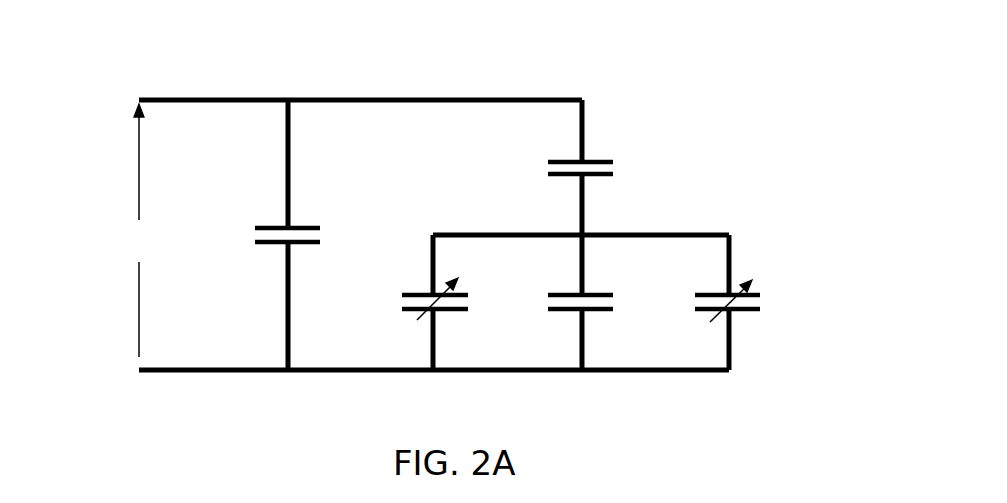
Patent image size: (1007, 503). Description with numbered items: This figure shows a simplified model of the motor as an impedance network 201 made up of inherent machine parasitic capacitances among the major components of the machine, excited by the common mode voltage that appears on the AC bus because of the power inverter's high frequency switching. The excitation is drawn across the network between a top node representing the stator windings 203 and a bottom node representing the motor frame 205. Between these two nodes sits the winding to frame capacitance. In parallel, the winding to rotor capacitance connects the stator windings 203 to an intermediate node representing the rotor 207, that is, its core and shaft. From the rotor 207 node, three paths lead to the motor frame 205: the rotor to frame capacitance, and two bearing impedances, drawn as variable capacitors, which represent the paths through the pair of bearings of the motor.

The impedance network 201 is at (443, 212).
The stator windings 203 is at (316, 100).
The motor frame 205 is at (360, 371).
The rotor 207 is at (540, 235).